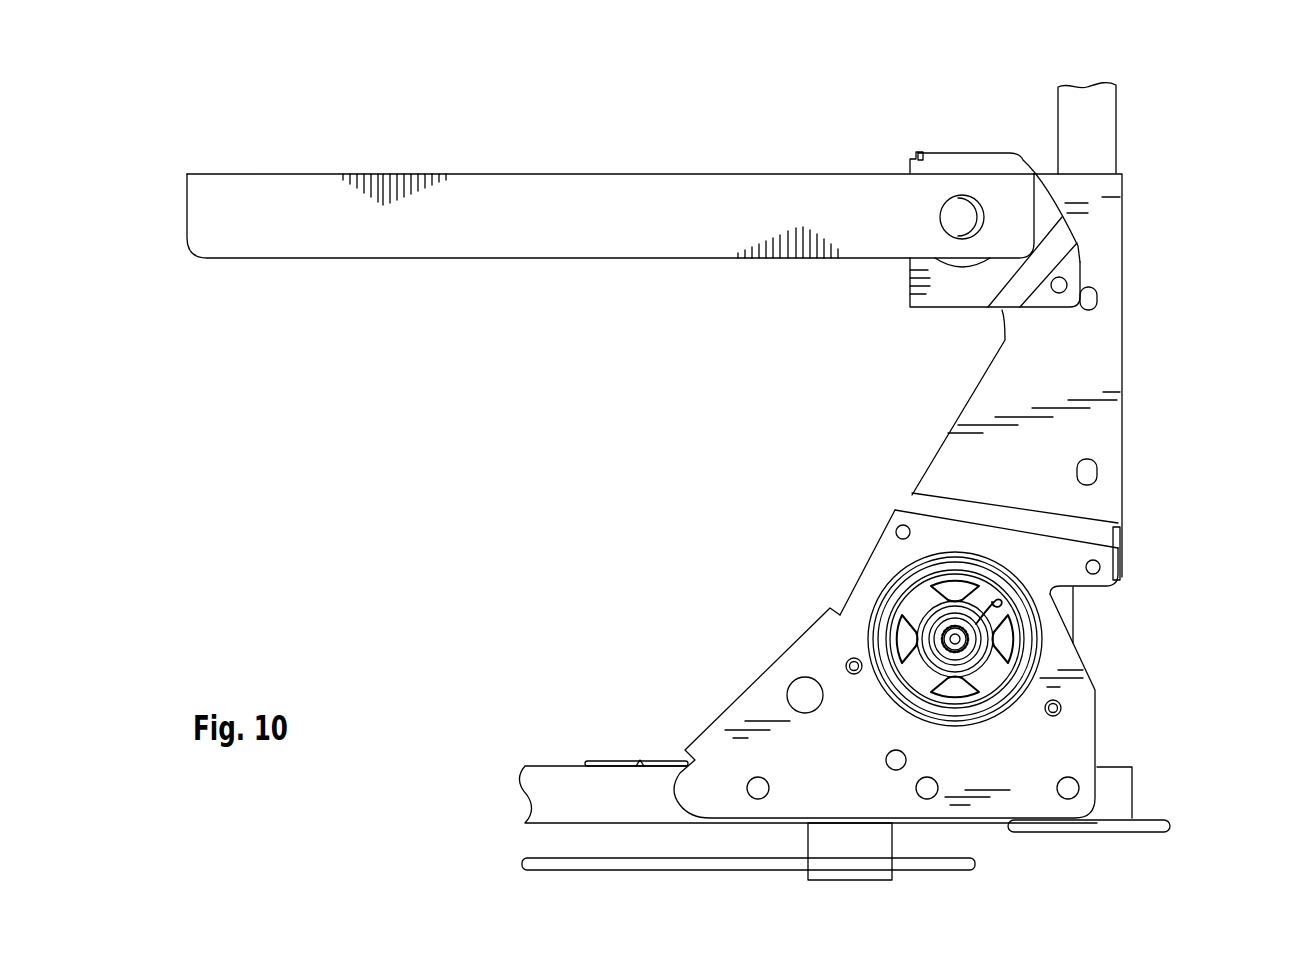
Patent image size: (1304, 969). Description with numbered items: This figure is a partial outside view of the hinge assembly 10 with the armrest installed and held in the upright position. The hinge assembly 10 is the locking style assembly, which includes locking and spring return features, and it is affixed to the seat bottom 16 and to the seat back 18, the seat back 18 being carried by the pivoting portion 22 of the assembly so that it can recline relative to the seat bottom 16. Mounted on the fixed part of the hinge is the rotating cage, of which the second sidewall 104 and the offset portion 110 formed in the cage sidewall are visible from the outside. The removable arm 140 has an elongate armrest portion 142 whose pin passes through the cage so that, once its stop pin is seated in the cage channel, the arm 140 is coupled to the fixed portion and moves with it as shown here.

The hinge assembly 10 is at (733, 504).
The seat bottom 16 is at (537, 752).
The seat back 18 is at (1128, 114).
The pivoting portion 22 is at (1146, 410).
The second sidewall 104 is at (910, 297).
The offset portion 110 is at (1070, 265).
The removable arm 140 is at (470, 140).
The armrest portion 142 is at (712, 173).